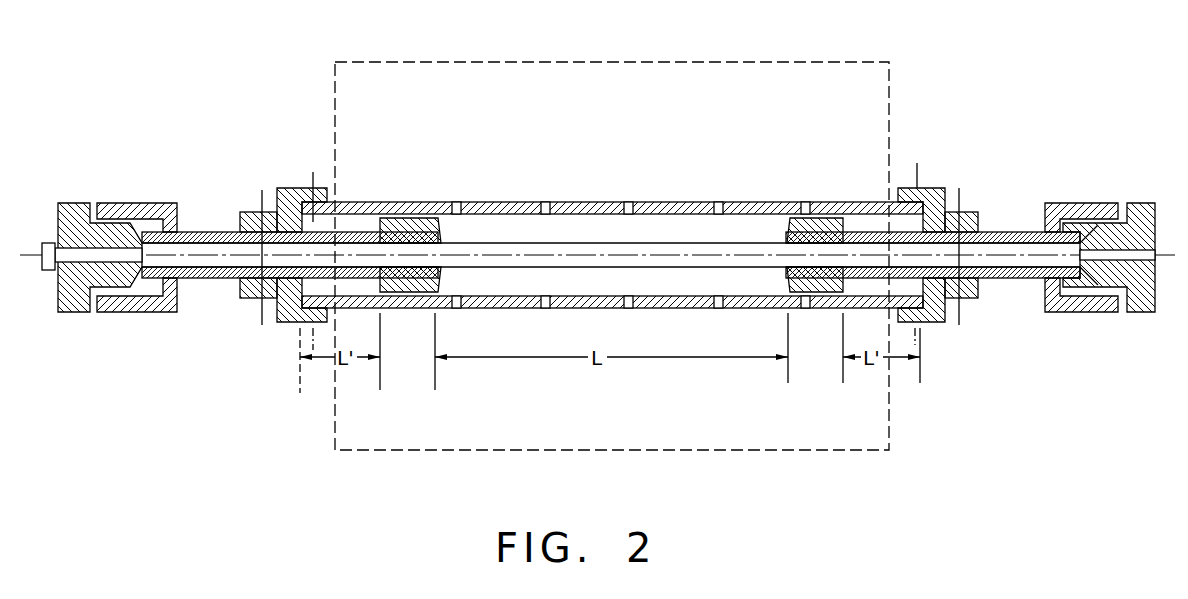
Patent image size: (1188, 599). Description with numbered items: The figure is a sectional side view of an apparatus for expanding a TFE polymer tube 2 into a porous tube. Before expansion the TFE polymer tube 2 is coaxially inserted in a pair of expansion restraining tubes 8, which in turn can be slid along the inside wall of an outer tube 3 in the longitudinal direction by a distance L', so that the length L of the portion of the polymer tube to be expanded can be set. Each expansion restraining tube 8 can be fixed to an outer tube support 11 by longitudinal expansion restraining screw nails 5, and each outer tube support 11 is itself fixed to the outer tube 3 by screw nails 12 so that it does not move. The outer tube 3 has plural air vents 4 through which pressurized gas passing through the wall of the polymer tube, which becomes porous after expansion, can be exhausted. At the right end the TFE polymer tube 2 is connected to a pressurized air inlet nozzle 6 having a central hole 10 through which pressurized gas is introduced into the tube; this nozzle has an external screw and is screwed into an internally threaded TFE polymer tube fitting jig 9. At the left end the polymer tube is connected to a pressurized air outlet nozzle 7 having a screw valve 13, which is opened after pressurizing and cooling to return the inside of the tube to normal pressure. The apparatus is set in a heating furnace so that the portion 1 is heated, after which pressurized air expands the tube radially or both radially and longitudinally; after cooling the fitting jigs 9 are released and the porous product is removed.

The heated portion 1 is at (850, 62).
The TFE polymer tube 2 is at (752, 243).
The outer tube 3 is at (605, 202).
The air vents 4 is at (547, 202).
The longitudinal expansion restraining screw nails 5 is at (245, 212).
The pressurized air inlet nozzle 6 is at (1133, 203).
The pressurized air outlet nozzle 7 is at (68, 203).
The expansion restraining tubes 8 is at (1023, 232).
The TFE polymer tube fitting jig 9 is at (160, 203).
The central hole 10 is at (1157, 230).
The outer tube support 11 is at (278, 188).
The screw nails 12 is at (313, 180).
The screw valve 13 is at (42, 258).